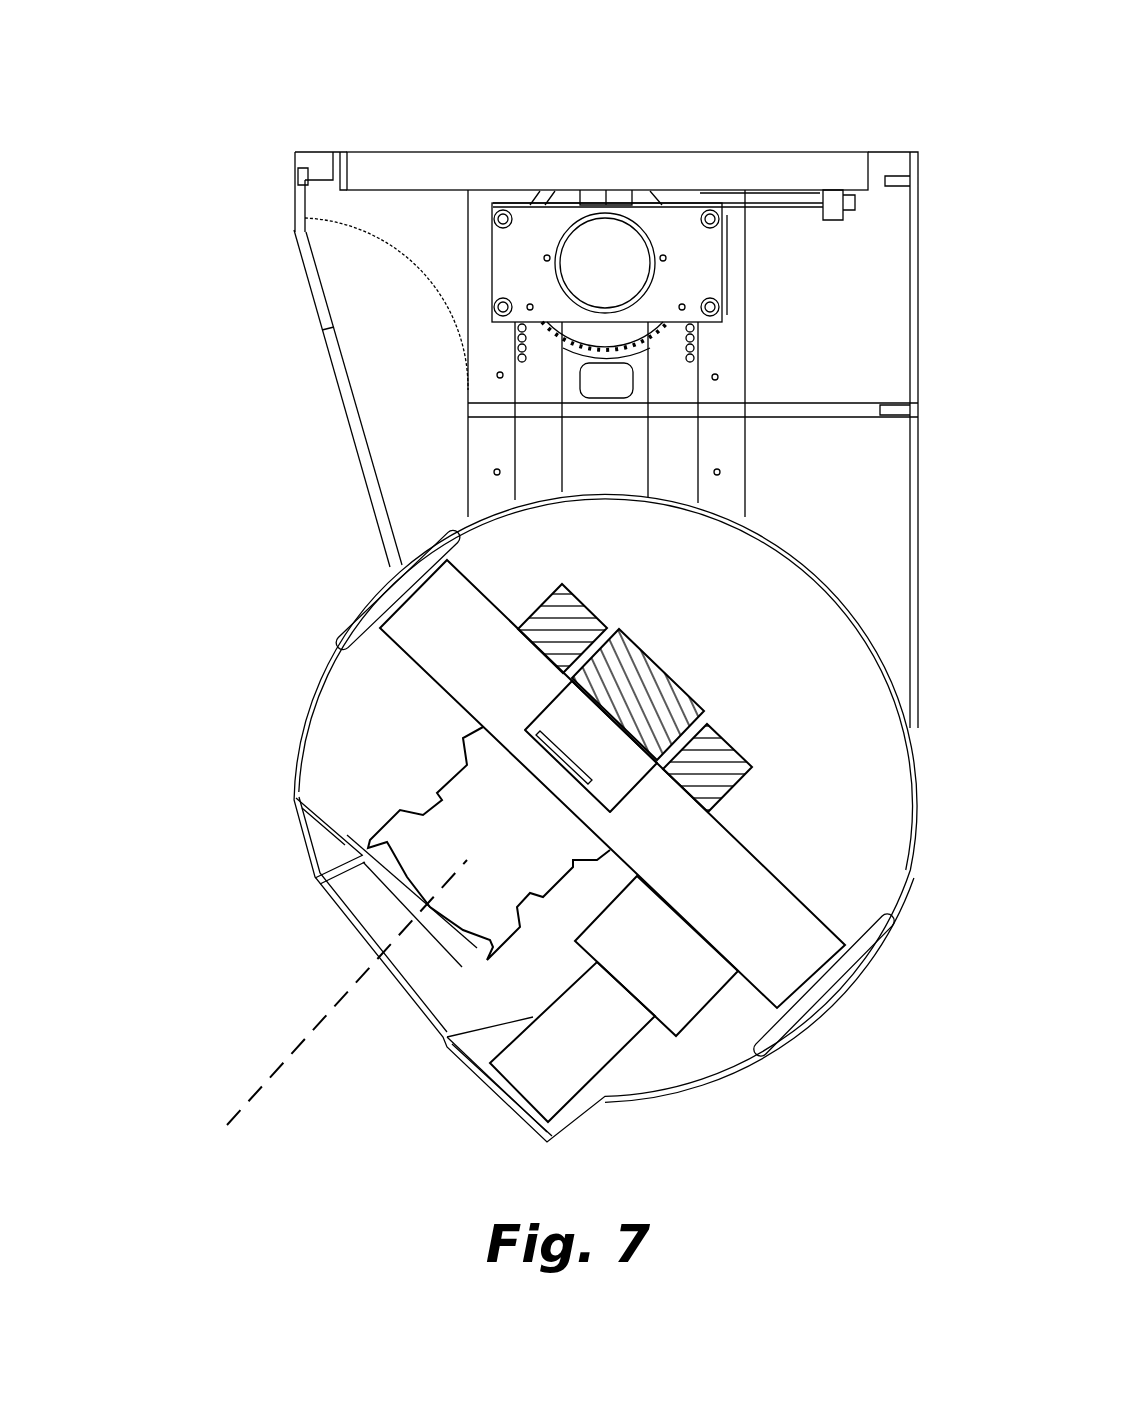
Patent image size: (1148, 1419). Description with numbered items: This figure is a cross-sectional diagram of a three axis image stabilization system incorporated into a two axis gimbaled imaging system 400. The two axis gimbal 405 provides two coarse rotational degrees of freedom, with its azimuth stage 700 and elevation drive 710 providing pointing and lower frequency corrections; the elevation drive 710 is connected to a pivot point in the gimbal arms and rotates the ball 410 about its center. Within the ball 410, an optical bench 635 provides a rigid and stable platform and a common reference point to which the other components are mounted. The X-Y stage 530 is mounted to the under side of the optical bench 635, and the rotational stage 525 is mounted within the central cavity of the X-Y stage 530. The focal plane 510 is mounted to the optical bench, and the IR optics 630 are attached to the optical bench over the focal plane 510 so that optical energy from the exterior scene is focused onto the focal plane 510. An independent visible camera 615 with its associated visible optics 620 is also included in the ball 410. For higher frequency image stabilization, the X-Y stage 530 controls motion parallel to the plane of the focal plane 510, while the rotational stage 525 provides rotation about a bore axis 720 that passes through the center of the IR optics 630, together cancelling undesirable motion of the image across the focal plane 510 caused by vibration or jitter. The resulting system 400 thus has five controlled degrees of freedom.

The two axis gimbaled imaging system 400 is at (176, 74).
The two axis gimbal 405 is at (562, 440).
The ball 410 is at (575, 818).
The focal plane 510 is at (554, 716).
The rotational stage 525 is at (686, 682).
The X-Y stage 530 is at (697, 714).
The visible camera 615 is at (656, 956).
The visible optics 620 is at (572, 1042).
The IR optics 630 is at (478, 847).
The optical bench 635 is at (612, 784).
The azimuth stage 700 is at (607, 126).
The elevation drive 710 is at (674, 300).
The bore axis 720 is at (310, 992).